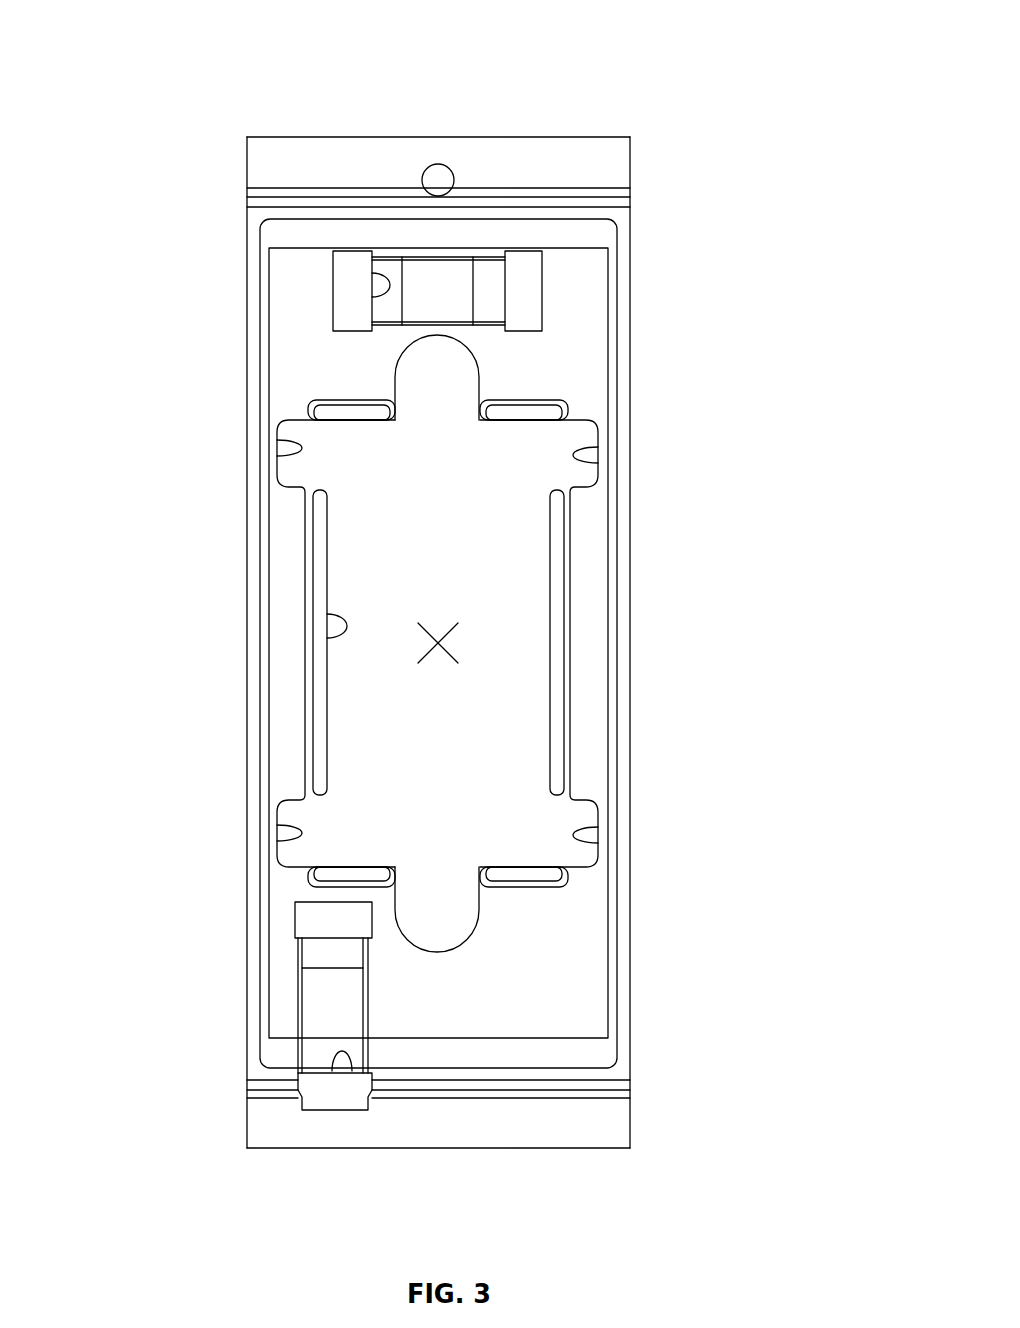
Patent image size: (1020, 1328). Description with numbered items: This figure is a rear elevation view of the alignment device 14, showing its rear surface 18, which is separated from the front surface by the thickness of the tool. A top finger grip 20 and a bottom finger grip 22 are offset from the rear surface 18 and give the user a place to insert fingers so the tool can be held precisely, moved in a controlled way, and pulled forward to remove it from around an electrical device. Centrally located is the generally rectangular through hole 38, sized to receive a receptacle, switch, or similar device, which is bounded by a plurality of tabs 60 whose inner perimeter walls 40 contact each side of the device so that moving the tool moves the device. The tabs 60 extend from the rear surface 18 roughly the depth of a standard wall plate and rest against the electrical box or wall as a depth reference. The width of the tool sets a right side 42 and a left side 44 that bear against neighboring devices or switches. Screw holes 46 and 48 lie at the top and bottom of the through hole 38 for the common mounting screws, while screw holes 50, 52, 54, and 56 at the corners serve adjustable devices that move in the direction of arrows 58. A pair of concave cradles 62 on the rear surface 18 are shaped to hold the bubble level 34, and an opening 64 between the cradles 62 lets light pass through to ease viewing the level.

The alignment device 14 is at (478, 98).
The rear surface 18 is at (285, 325).
The top finger grip 20 is at (592, 160).
The bottom finger grip 22 is at (612, 1118).
The bubble level 34 is at (460, 300).
The through hole 38 is at (325, 625).
The inner perimeter walls 40 is at (357, 420).
The right side 42 is at (246, 543).
The left side 44 is at (632, 643).
The screw hole 46 is at (432, 338).
The screw hole 48 is at (470, 930).
The screw hole 50 is at (580, 448).
The screw hole 52 is at (290, 446).
The screw hole 54 is at (580, 834).
The screw hole 56 is at (290, 832).
The arrows 58 is at (438, 640).
The tabs 60 is at (326, 410).
The cradles 62 is at (348, 272).
The opening 64 is at (378, 282).